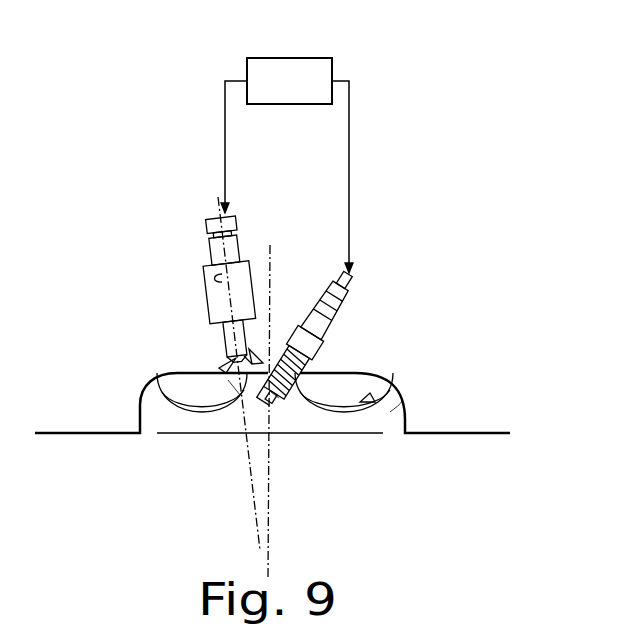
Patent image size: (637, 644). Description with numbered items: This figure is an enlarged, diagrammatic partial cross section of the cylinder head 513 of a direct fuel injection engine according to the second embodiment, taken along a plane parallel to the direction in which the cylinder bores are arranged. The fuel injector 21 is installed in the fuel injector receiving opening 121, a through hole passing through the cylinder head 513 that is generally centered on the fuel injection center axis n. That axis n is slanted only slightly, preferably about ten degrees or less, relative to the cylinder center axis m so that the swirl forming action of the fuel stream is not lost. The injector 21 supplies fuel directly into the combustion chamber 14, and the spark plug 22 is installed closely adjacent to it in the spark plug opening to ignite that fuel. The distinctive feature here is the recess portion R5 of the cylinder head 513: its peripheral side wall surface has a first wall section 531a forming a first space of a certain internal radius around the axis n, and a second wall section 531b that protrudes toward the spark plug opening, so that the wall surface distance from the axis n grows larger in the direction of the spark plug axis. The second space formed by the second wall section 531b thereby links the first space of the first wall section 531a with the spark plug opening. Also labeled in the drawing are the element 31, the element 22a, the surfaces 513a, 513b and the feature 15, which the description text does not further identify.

The control unit 31 is at (291, 58).
The fuel injector 21 is at (210, 312).
The fuel injector receiving opening 121 is at (216, 278).
The first wall section 531a is at (220, 362).
The second wall section 531b is at (252, 347).
The spark plug 22 is at (343, 320).
The spark plug electrode 22a is at (285, 407).
The cylinder head 513 is at (392, 253).
The piston top surface 513a is at (393, 418).
The piston peripheral top surface 513b is at (428, 437).
The combustion chamber 14 is at (370, 422).
The valve recess 15 is at (173, 393).
The recess portion R5 is at (233, 380).
The fuel injection center axis n is at (257, 515).
The cylinder center axis m is at (272, 543).